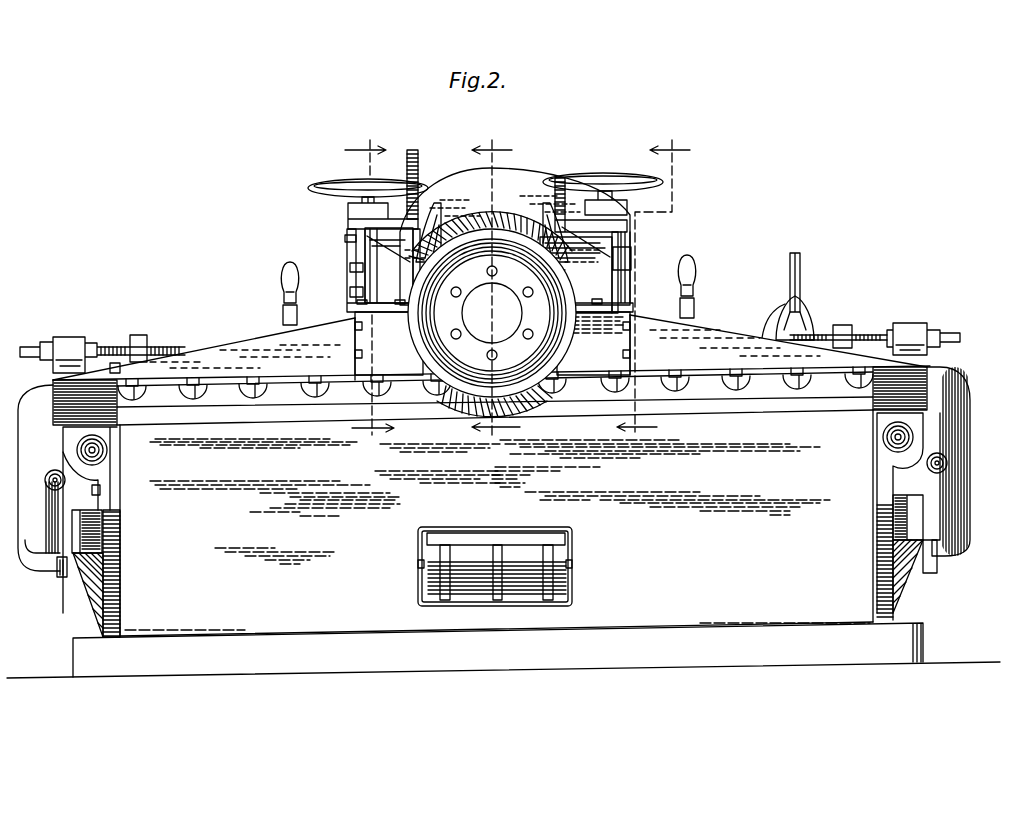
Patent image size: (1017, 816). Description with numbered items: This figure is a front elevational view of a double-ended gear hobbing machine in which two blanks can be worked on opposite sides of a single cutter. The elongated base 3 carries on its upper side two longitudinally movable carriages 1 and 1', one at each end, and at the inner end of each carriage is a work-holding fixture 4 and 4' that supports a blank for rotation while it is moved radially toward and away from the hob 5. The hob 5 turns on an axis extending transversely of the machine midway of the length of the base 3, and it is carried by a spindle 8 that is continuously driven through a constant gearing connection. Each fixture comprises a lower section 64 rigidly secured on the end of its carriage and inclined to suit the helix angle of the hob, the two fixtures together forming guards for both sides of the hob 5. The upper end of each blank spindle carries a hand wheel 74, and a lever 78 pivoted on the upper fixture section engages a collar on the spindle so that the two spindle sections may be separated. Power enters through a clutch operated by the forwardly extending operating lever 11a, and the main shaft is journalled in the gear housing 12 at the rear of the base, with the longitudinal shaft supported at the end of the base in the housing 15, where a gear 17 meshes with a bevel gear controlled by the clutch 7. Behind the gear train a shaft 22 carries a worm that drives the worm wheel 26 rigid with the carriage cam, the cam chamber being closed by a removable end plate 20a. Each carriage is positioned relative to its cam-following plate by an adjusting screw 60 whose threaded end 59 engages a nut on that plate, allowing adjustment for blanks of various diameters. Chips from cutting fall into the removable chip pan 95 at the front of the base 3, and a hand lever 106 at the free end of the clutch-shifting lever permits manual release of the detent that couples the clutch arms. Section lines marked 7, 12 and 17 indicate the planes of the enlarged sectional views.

The carriage 1 is at (778, 329).
The carriage 1' is at (204, 337).
The base 3 is at (503, 544).
The work-holding fixture 4 is at (628, 243).
The work-holding fixture 4' is at (352, 253).
The hob 5 is at (497, 212).
The clutch 7 is at (496, 289).
The spindle 8 is at (492, 313).
The operating lever 11a is at (797, 263).
The gear housing 12 is at (657, 285).
The housing 15 is at (957, 458).
The gear 17 is at (365, 293).
The removable end plate 20a is at (908, 587).
The shaft 22 is at (107, 455).
The worm wheel 26 is at (905, 523).
The threaded end 59 is at (863, 333).
The adjusting screw 60 is at (917, 328).
The lower section 64 is at (671, 250).
The hand wheel 74 is at (385, 180).
The lever 78 is at (420, 160).
The chip pan 95 is at (527, 553).
The hand lever 106 is at (284, 275).